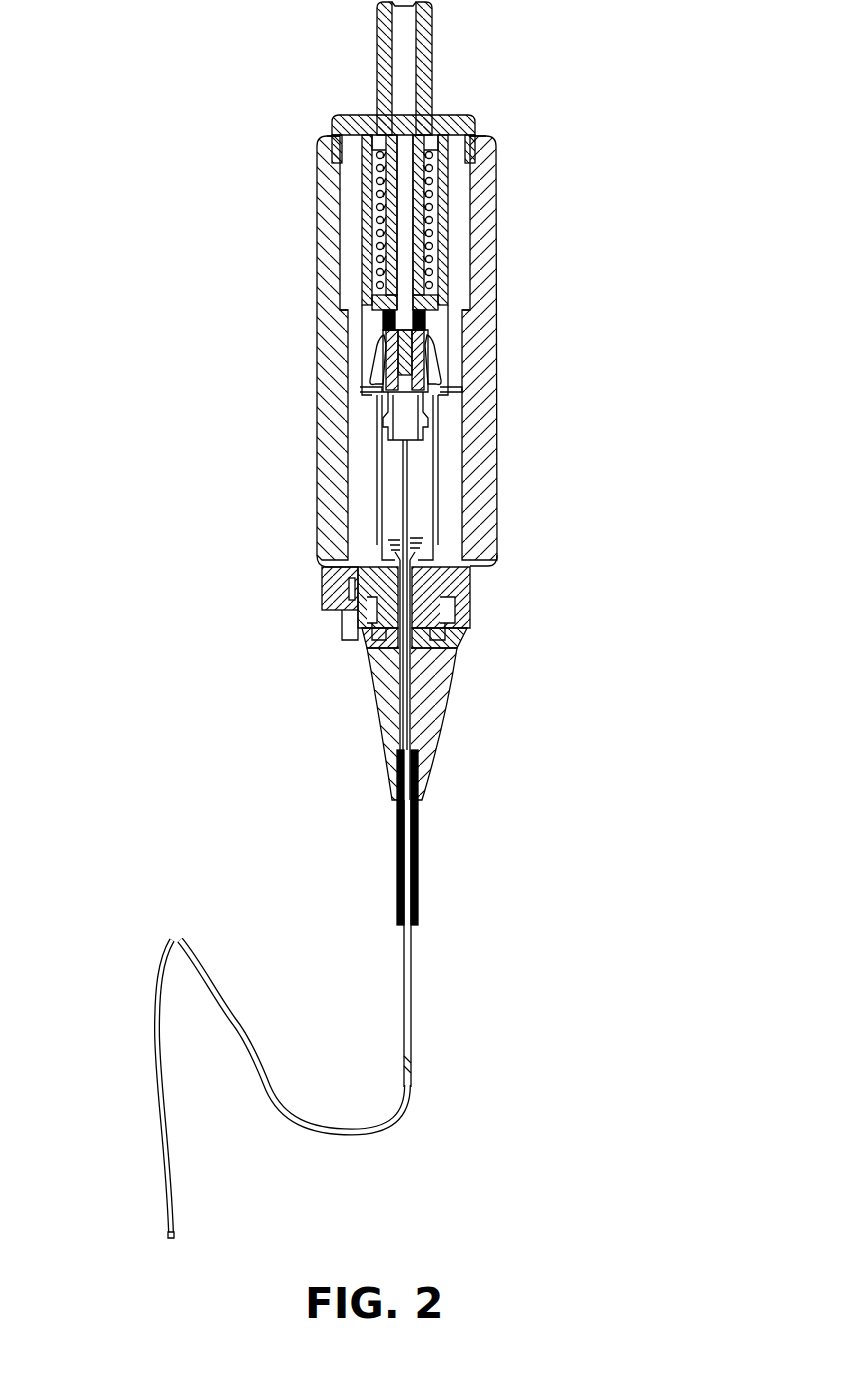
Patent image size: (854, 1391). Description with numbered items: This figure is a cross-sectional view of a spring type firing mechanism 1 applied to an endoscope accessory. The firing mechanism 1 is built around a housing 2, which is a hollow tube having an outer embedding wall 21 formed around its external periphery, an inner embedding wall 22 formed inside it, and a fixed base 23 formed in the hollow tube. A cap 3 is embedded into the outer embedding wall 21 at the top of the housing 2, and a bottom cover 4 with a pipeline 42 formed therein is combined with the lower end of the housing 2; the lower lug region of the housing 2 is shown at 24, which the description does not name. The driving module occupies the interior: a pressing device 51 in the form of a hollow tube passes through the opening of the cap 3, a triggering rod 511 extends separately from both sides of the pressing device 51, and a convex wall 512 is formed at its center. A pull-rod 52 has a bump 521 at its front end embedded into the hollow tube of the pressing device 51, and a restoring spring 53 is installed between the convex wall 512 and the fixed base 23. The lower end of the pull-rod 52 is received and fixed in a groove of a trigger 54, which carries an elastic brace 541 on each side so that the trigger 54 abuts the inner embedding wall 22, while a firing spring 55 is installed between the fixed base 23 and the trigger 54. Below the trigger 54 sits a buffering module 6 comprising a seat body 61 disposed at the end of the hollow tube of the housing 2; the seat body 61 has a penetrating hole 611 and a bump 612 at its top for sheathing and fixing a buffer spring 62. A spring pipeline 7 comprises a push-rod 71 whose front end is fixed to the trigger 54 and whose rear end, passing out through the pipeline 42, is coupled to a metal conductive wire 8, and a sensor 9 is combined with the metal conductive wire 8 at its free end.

The firing mechanism 1 is at (186, 211).
The housing 2 is at (468, 243).
The outer embedding wall 21 is at (474, 158).
The inner embedding wall 22 is at (443, 387).
The fixed base 23 is at (440, 302).
The housing lug 24 is at (340, 603).
The cap 3 is at (470, 113).
The bottom cover 4 is at (385, 693).
The pipeline 42 is at (426, 700).
The pressing device 51 is at (427, 28).
The triggering rod 511 is at (444, 270).
The convex wall 512 is at (466, 137).
The pull-rod 52 is at (378, 180).
The bump 521 is at (332, 121).
The restoring spring 53 is at (428, 215).
The trigger 54 is at (421, 350).
The elastic brace 541 is at (372, 384).
The firing spring 55 is at (385, 320).
The buffering module 6 is at (407, 476).
The seat body 61 is at (429, 588).
The penetrating hole 611 is at (421, 615).
The bump 612 is at (416, 552).
The buffer spring 62 is at (421, 540).
The spring pipeline 7 is at (442, 863).
The push-rod 71 is at (416, 665).
The metal conductive wire 8 is at (157, 1052).
The sensor 9 is at (158, 1237).